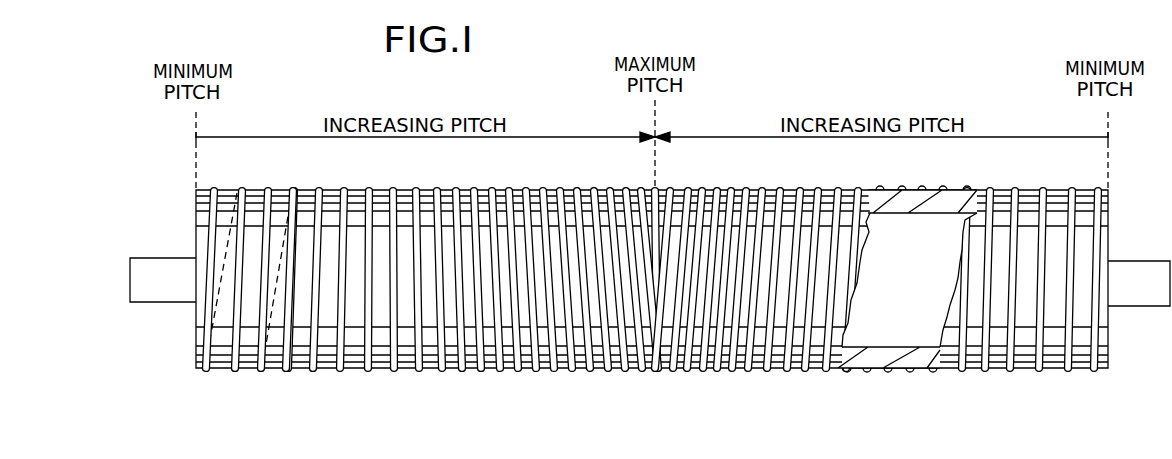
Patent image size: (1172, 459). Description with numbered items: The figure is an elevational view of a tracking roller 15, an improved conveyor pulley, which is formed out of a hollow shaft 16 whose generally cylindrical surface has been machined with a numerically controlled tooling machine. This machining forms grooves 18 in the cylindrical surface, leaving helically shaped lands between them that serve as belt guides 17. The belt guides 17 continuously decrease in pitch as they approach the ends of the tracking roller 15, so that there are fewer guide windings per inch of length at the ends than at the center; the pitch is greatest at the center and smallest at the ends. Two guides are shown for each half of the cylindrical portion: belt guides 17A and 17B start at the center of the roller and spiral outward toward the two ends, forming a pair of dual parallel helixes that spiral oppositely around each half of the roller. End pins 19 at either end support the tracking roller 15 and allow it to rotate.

The tracking roller 15 is at (402, 376).
The hollow shaft 16 is at (928, 190).
The belt guides 17 is at (263, 372).
The belt guide 17A is at (293, 190).
The belt guide 17B is at (367, 190).
The grooves 18 is at (890, 408).
The end pins 19 is at (1133, 307).